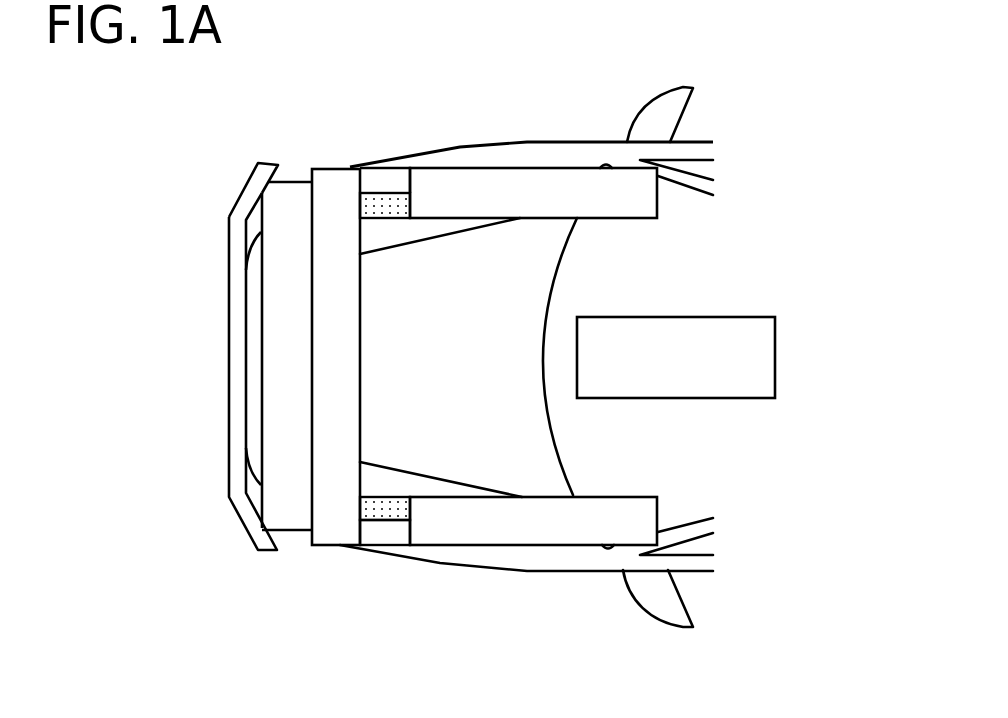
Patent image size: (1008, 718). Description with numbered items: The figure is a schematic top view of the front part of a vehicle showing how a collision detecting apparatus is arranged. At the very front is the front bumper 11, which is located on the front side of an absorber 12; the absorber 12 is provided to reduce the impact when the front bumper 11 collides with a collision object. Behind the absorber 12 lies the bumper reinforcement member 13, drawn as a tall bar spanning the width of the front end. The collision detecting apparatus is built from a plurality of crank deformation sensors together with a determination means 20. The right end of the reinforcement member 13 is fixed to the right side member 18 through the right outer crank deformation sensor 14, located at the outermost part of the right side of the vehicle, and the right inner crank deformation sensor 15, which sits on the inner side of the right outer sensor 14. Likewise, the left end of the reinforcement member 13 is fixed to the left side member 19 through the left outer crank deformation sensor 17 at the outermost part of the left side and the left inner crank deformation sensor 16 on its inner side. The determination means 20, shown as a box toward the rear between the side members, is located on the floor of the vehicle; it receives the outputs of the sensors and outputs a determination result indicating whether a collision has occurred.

The front bumper 11 is at (243, 338).
The absorber 12 is at (257, 503).
The bumper reinforcement member 13 is at (322, 547).
The right outer crank deformation sensor 14 is at (400, 157).
The right inner crank deformation sensor 15 is at (400, 218).
The left inner crank deformation sensor 16 is at (398, 497).
The left outer crank deformation sensor 17 is at (398, 547).
The right side member 18 is at (480, 168).
The left side member 19 is at (473, 547).
The determination means 20 is at (775, 337).